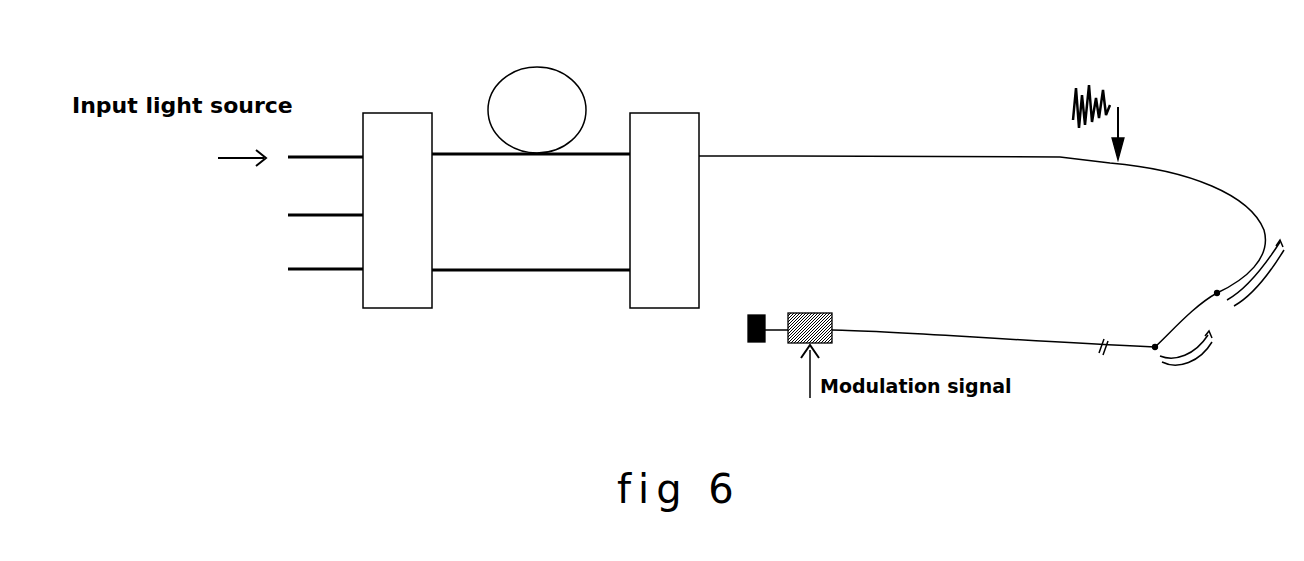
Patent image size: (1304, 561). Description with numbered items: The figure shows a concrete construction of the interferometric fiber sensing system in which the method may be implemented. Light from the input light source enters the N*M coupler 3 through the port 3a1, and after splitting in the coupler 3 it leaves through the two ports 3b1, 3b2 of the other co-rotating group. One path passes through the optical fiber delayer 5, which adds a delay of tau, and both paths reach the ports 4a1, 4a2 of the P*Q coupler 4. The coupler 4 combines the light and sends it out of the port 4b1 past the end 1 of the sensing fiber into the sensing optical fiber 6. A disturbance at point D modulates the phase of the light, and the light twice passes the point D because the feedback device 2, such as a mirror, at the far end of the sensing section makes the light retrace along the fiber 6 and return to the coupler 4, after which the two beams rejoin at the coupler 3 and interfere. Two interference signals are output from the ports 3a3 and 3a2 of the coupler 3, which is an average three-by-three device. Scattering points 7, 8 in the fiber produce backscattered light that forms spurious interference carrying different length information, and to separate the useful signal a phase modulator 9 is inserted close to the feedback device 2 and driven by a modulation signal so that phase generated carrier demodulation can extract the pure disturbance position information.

The end of the sensing optical fiber 1 is at (758, 168).
The feedback device 2 is at (756, 345).
The N*M coupler 3 is at (397, 210).
The port of coupler 3 3a1 is at (325, 145).
The port of coupler 3 3a2 is at (325, 203).
The port of coupler 3 3a3 is at (325, 257).
The port of coupler 3 3b1 is at (481, 142).
The port of coupler 3 3b2 is at (481, 258).
The P*Q coupler 4 is at (664, 210).
The port of coupler 4 4a1 is at (580, 142).
The port of coupler 4 4a2 is at (580, 258).
The port of coupler 4 4b1 is at (719, 147).
The optical fiber delayer 5 is at (540, 110).
The sensing optical fiber 6 is at (1027, 232).
The scattering point 7 is at (1244, 273).
The scattering point 8 is at (1181, 342).
The phase modulator 9 is at (810, 315).
The disturbance point D is at (1111, 122).